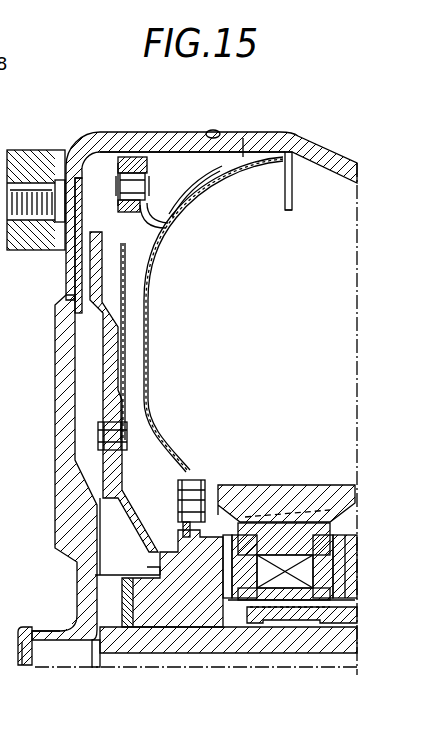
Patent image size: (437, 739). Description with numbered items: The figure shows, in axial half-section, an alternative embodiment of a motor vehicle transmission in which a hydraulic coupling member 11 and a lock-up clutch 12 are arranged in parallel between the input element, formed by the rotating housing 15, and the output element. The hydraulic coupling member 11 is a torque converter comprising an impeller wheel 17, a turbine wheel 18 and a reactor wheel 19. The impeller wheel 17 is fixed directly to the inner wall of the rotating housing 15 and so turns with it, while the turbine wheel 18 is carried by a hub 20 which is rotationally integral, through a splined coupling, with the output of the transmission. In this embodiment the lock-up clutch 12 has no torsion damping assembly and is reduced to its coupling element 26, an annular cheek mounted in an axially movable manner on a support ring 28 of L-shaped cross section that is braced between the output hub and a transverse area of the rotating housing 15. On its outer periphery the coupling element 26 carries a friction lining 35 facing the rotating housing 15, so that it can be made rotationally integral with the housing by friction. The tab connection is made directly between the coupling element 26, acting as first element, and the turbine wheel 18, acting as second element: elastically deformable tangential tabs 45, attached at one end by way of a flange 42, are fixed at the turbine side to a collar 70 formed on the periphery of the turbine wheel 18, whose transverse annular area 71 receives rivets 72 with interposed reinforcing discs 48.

The hydraulic coupling member 11 is at (190, 165).
The lock-up clutch 12 is at (104, 262).
The rotating housing 15 is at (262, 125).
The impeller wheel 17 is at (283, 188).
The turbine wheel 18 is at (292, 211).
The reactor wheel 19 is at (302, 487).
The hub 20 is at (168, 555).
The coupling element 26 is at (87, 367).
The support ring 28 is at (93, 633).
The friction lining 35 is at (77, 196).
The flange 42 is at (126, 302).
The tangential tab 45 is at (117, 157).
The reinforcing disc 48 is at (131, 157).
The collar 70 is at (143, 233).
The annular area 71 is at (128, 180).
The rivet 72 is at (152, 158).